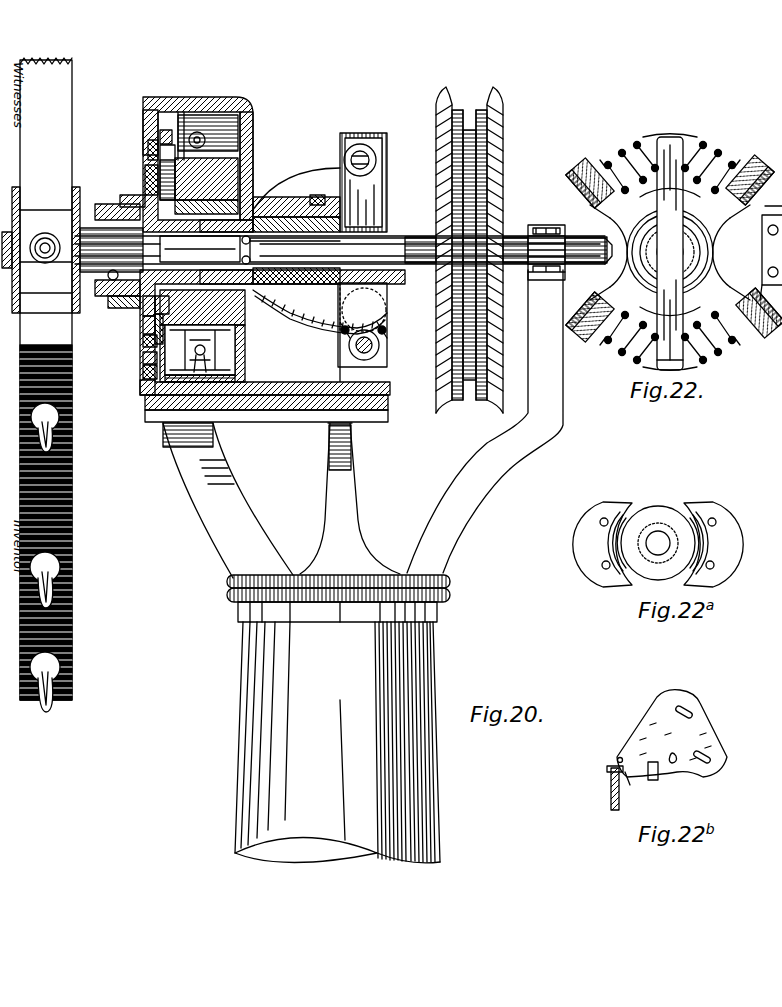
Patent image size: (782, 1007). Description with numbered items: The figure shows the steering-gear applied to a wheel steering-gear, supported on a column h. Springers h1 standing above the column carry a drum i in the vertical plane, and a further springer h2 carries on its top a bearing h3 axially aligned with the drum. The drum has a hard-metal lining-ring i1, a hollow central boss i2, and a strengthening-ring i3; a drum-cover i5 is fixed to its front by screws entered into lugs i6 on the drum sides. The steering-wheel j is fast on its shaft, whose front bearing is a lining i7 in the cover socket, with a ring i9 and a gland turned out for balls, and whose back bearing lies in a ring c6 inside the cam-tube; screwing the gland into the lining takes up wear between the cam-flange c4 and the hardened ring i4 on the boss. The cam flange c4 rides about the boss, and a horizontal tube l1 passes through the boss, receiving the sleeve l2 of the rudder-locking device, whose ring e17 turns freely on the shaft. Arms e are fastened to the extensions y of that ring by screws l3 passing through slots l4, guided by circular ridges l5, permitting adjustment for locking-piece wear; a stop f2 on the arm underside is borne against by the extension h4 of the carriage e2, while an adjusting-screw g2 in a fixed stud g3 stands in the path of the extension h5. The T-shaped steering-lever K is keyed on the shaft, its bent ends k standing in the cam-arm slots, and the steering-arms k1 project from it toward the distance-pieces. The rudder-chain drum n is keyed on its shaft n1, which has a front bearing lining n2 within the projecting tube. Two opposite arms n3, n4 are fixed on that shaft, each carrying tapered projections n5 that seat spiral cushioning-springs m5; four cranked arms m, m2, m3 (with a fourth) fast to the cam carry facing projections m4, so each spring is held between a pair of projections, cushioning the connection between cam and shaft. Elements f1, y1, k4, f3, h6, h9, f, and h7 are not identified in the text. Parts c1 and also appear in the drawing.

In FIG. 20, the steering-wheel j is at (72, 487).
In FIG. 20, the ring i9 is at (100, 212).
In FIG. 20, the shaft f1 is at (178, 255).
In FIG. 20, the lining n2 is at (300, 240).
In FIG. 20, the lining-ring i1 is at (232, 100).
In FIG. 20, the winding y1 is at (210, 115).
In FIG. 22B, the winding y1 is at (615, 810).
In FIG. 20, the extension of the carriage h4 is at (197, 132).
In FIG. 20, the spindle k4 is at (180, 112).
In FIG. 20, the drum-cover i5 is at (148, 112).
In FIG. 20, the fixed stud g3 is at (150, 140).
In FIG. 22B, the fixed stud g3 is at (653, 780).
In FIG. 20, the lever e is at (160, 137).
In FIG. 22B, the lever e is at (645, 728).
In FIG. 20, the extensions of the ring y is at (160, 150).
In FIG. 22A, the extensions of the ring y is at (590, 544).
In FIG. 20, the steering-lever K is at (160, 170).
In FIG. 20, the circular ridges l5 is at (145, 185).
In FIG. 22A, the circular ridges l5 is at (620, 515).
In FIG. 20, the ring of the rudder-locking device e17 is at (120, 200).
In FIG. 22A, the ring of the rudder-locking device e17 is at (660, 508).
In FIG. 20, the drum i is at (253, 138).
In FIG. 20, the cover c1 is at (270, 168).
In FIG. 20, the annular flange c4 is at (238, 170).
In FIG. 20, the central boss i2 is at (238, 205).
In FIG. 20, the strengthening-ring i3 is at (253, 222).
In FIG. 20, the sleeve l2 is at (262, 220).
In FIG. 20, the hardened metal ring i4 is at (300, 203).
In FIG. 20, the arm n3 is at (362, 208).
In FIG. 22, the arm n3 is at (670, 145).
In FIG. 20, the tapered projection n5 is at (366, 150).
In FIG. 22, the tapered projection n5 is at (648, 150).
In FIG. 20, the projection m4 is at (322, 196).
In FIG. 22, the projection m4 is at (680, 251).
In FIG. 20, the arm n4 is at (384, 360).
In FIG. 22, the arm n4 is at (668, 360).
In FIG. 20, the arm m3 is at (330, 320).
In FIG. 22, the arm m3 is at (585, 330).
In FIG. 20, the cushioning-spring m5 is at (387, 335).
In FIG. 22, the cushioning-spring m5 is at (625, 155).
In FIG. 20, the drum n is at (500, 135).
In FIG. 20, the shaft n1 is at (428, 265).
In FIG. 22, the shaft n1 is at (675, 252).
In FIG. 20, the bearing h3 is at (545, 225).
In FIG. 20, the stop f2 is at (108, 277).
In FIG. 22B, the stop f2 is at (671, 765).
In FIG. 20, the lining i7 is at (108, 300).
In FIG. 20, the screw l3 is at (143, 302).
In FIG. 20, the steering-arm k1 is at (143, 322).
In FIG. 20, the pin f3 is at (155, 328).
In FIG. 20, the adjusting-screw g2 is at (160, 315).
In FIG. 20, the ring c6 is at (245, 312).
In FIG. 20, the horizontal tube l1 is at (236, 350).
In FIG. 20, the ball h6 is at (206, 352).
In FIG. 20, the carriage e2 is at (236, 378).
In FIG. 20, the extension h5 is at (145, 405).
In FIG. 20, the springer h1 is at (252, 500).
In FIG. 20, the column h9 is at (320, 412).
In FIG. 20, the springer h2 is at (470, 505).
In FIG. 20, the column h is at (338, 719).
In FIG. 22, the arm m is at (590, 170).
In FIG. 22, the arm m2 is at (760, 335).
In FIG. 22, the lug i6 is at (772, 250).
In FIG. 22, the plate f is at (773, 207).
In FIG. 22, the end of the steering-lever k is at (770, 298).
In FIG. 22B, the slot l4 is at (686, 707).
In FIG. 22B, the pin h7 is at (636, 789).